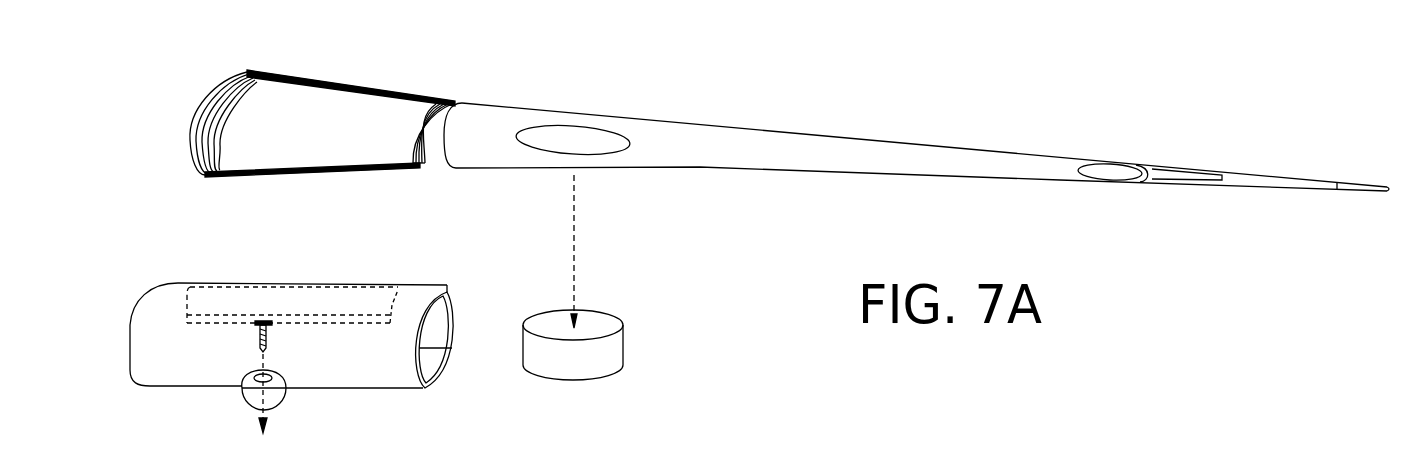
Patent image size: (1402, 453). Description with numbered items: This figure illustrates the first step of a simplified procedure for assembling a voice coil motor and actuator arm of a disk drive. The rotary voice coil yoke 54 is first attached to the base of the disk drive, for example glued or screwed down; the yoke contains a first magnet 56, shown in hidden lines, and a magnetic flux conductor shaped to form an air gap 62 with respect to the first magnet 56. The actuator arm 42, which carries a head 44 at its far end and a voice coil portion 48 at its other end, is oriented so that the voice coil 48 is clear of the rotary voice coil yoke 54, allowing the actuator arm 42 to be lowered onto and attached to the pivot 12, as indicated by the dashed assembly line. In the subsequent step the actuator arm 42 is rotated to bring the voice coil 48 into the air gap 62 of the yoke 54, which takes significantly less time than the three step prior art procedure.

The pivot 12 is at (625, 333).
The actuator arm 42 is at (748, 130).
The head 44 is at (1360, 185).
The voice coil portion 48 is at (216, 72).
The rotary voice coil yoke 54 is at (130, 282).
The first magnet 56 is at (322, 328).
The air gap 62 is at (455, 336).